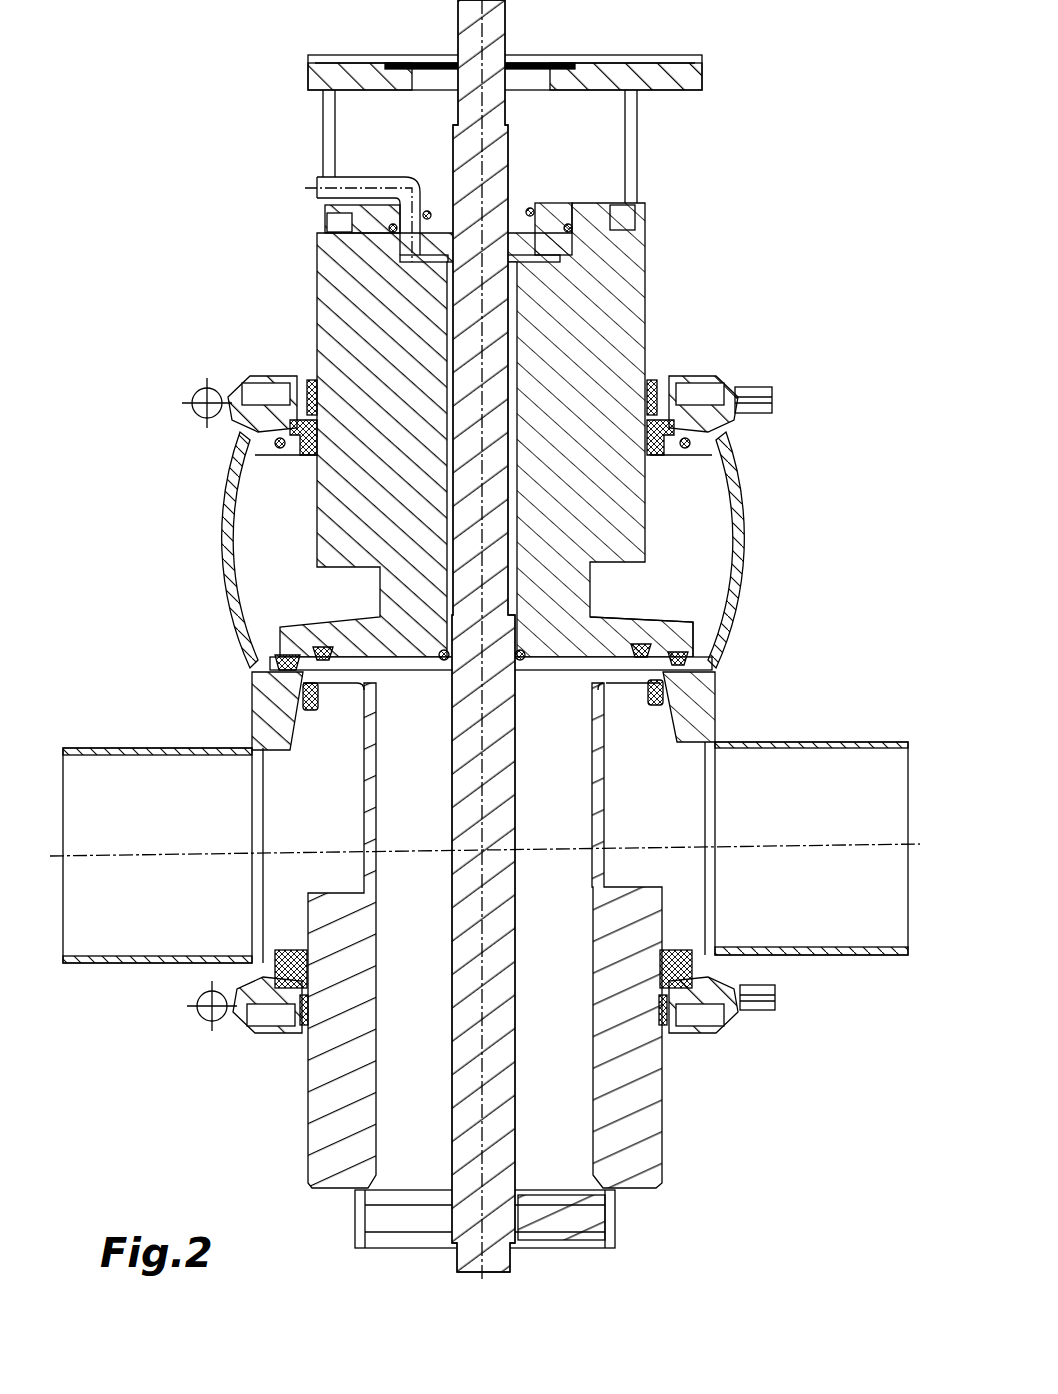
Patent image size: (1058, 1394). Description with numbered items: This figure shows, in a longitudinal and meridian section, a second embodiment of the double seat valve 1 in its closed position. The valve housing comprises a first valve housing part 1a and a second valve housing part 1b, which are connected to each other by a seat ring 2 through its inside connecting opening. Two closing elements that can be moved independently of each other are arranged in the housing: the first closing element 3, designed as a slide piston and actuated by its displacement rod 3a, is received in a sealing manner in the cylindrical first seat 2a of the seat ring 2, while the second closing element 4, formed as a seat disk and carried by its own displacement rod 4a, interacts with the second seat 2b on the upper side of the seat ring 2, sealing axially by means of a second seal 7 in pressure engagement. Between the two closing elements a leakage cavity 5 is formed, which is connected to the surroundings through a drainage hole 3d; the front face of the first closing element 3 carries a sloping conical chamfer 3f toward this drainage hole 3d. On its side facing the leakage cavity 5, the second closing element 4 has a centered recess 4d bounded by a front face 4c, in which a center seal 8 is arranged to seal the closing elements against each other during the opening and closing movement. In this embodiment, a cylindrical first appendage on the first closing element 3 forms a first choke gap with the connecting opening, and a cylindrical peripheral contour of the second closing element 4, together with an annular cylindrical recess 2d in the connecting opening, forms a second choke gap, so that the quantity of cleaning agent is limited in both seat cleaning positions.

The double seat valve 1 is at (150, 677).
The first valve housing part 1a is at (257, 922).
The second valve housing part 1b is at (233, 507).
The seat ring 2 is at (275, 717).
The first seat 2a is at (313, 703).
The second seat 2b is at (289, 655).
The annular cylindrical recess 2d is at (277, 655).
The first closing element 3 is at (613, 697).
The displacement rod 3a is at (483, 343).
The drainage hole 3d is at (417, 946).
The sloping conical chamfer 3f is at (362, 684).
The second closing element 4 is at (672, 630).
The displacement rod 4a is at (578, 297).
The front face 4c is at (542, 656).
The centered recess 4d is at (577, 661).
The leakage cavity 5 is at (367, 696).
The second seal 7 is at (700, 660).
The center seal 8 is at (645, 643).